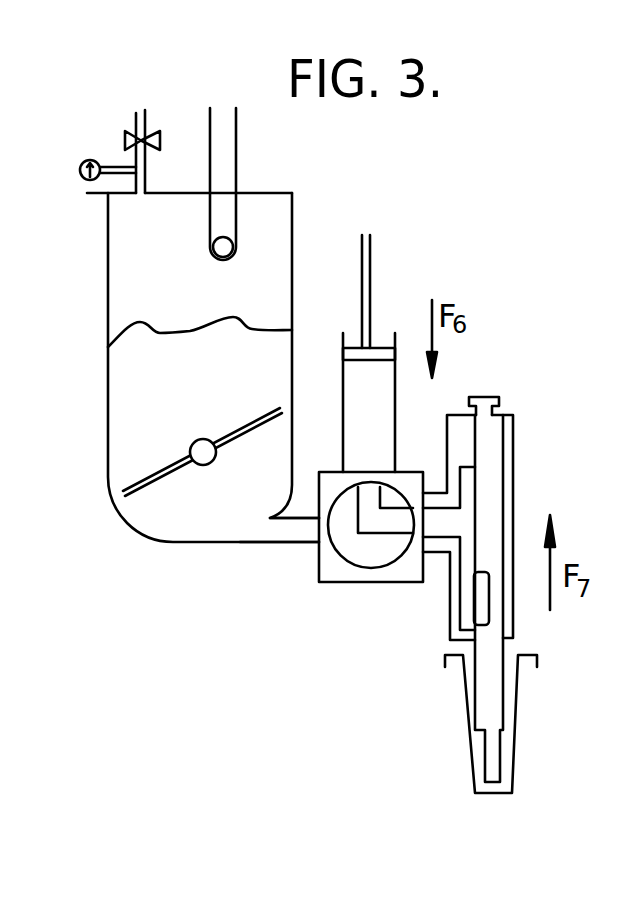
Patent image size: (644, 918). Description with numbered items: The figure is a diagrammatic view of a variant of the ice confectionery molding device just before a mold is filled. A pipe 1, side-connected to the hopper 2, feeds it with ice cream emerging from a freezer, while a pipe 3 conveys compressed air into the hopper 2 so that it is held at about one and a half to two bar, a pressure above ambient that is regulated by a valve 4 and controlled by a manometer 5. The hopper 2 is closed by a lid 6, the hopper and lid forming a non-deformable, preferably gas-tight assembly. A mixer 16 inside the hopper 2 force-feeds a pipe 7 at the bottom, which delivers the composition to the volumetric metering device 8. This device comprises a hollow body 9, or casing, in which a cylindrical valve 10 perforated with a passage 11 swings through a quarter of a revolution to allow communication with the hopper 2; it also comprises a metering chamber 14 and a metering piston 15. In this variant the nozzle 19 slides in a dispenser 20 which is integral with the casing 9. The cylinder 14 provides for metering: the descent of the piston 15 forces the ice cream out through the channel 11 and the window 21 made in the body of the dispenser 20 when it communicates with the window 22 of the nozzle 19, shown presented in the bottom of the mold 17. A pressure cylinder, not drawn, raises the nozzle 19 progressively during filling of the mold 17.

The pipe 1 is at (222, 217).
The hopper 2 is at (106, 276).
The pipe 3 is at (143, 112).
The valve 4 is at (123, 137).
The manometer 5 is at (80, 163).
The lid 6 is at (87, 193).
The pipe 7 is at (287, 528).
The volumetric metering device 8 is at (408, 225).
The hollow body 9 is at (337, 572).
The cylindrical valve 10 is at (379, 553).
The passage 11 is at (372, 522).
The metering chamber 14 is at (350, 382).
The metering piston 15 is at (373, 293).
The mixer 16 is at (140, 482).
The mold 17 is at (520, 705).
The nozzle 19 is at (485, 477).
The dispenser 20 is at (458, 425).
The window 21 is at (453, 565).
The window 22 is at (453, 630).